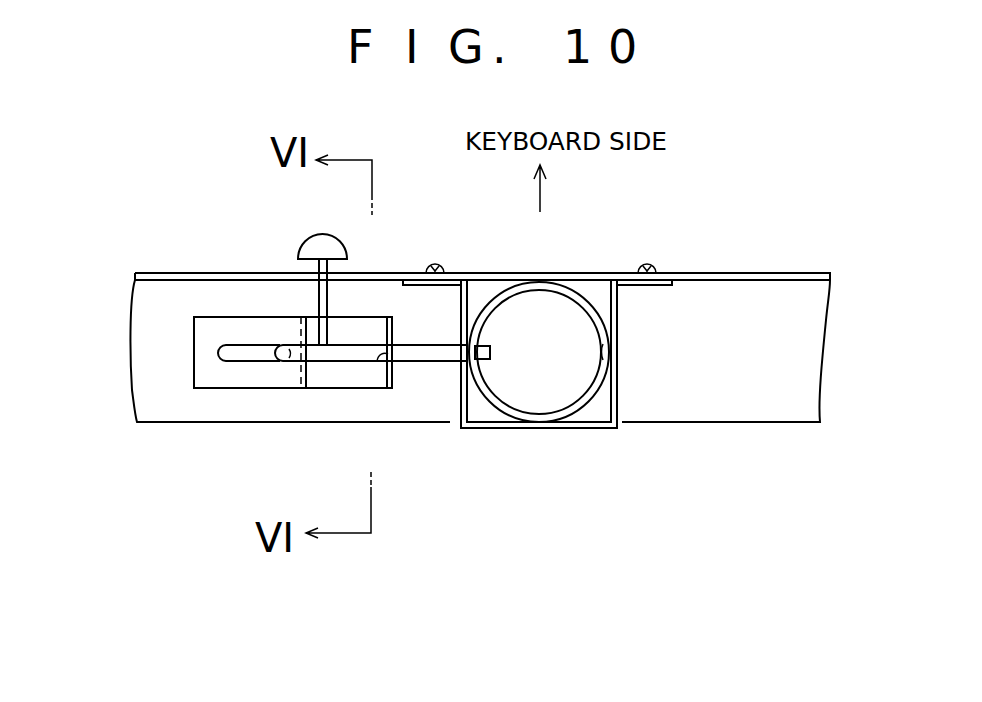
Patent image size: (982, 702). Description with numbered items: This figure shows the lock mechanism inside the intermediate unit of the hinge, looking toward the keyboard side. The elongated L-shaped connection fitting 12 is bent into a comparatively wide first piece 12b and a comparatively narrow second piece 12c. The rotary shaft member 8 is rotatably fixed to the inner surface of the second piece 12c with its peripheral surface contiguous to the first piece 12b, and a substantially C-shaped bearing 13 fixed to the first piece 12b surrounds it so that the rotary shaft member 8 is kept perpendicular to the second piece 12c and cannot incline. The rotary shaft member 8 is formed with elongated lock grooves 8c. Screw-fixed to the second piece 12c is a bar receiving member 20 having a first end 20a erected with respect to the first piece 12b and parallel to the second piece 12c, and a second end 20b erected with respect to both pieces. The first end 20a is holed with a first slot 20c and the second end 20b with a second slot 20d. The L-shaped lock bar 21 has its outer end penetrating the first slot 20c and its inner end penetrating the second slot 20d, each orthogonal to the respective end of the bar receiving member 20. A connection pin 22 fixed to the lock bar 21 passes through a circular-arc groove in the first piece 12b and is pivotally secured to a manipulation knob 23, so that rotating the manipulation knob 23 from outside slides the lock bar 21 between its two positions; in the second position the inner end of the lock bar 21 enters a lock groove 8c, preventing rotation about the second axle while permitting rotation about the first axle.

The rotary shaft member 8 is at (495, 407).
The lock grooves 8c is at (457, 353).
The connection fitting 12 is at (735, 297).
The first piece 12b is at (688, 273).
The second piece 12c is at (707, 398).
The bearing 13 is at (617, 405).
The bar receiving member 20 is at (212, 317).
The first end 20a is at (194, 358).
The second end 20b is at (393, 318).
The first slot 20c is at (238, 358).
The second slot 20d is at (377, 357).
The lock bar 21 is at (333, 356).
The connection pin 22 is at (317, 300).
The manipulation knob 23 is at (344, 243).